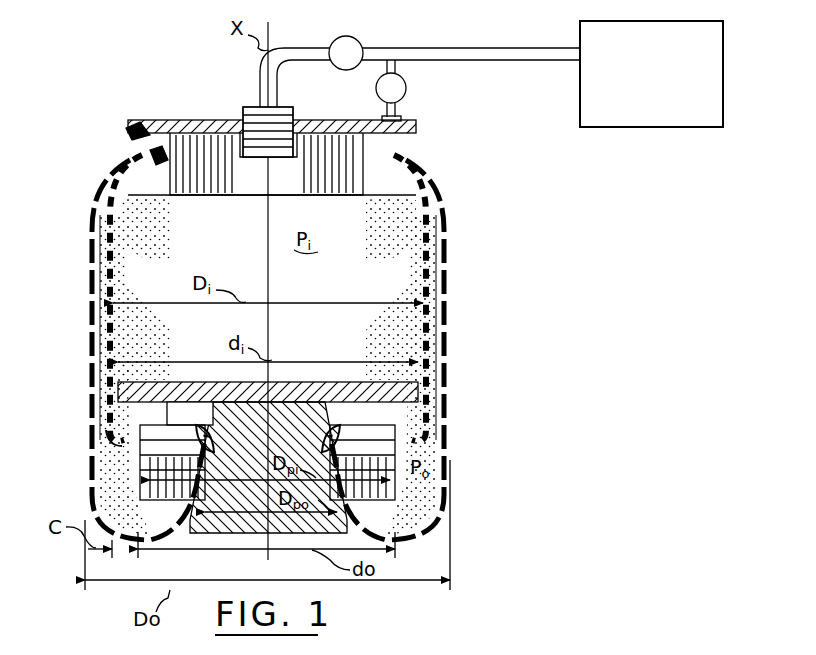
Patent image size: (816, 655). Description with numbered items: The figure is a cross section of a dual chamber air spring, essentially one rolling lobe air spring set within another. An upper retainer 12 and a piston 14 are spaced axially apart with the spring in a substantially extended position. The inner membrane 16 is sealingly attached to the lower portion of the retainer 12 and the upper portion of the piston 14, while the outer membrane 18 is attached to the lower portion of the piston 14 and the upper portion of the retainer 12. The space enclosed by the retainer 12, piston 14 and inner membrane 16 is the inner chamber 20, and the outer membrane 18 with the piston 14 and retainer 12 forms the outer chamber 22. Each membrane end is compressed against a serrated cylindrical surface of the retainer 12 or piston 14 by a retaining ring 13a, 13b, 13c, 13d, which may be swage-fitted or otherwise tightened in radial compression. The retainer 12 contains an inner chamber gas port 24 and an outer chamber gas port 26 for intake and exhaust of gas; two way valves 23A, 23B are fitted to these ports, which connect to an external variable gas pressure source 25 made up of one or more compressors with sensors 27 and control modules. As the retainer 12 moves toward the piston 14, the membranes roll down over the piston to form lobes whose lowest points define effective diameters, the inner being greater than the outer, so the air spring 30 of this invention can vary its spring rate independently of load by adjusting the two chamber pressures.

The upper retainer 12 is at (150, 132).
The retaining ring 13a is at (124, 130).
The retaining ring 13b is at (134, 160).
The retaining ring 13c is at (118, 392).
The retaining ring 13d is at (216, 430).
The piston 14 is at (290, 396).
The inner membrane 16 is at (432, 413).
The outer membrane 18 is at (440, 372).
The inner chamber 20 is at (420, 278).
The outer chamber 22 is at (424, 184).
The two way valve 23A is at (360, 42).
The two way valve 23B is at (407, 80).
The inner chamber gas port 24 is at (278, 158).
The external variable gas pressure source 25 is at (642, 126).
The outer chamber gas port 26 is at (397, 116).
The sensor 27 is at (252, 134).
The air spring 30 is at (267, 451).